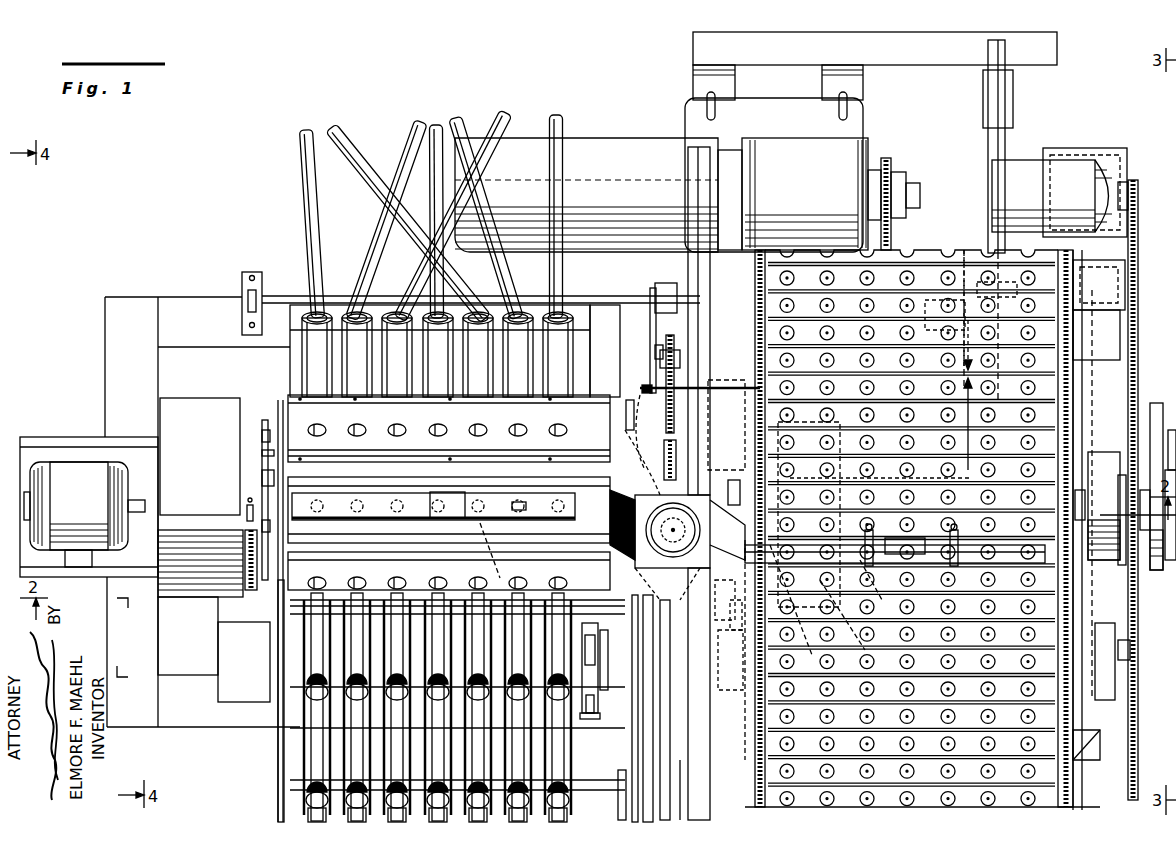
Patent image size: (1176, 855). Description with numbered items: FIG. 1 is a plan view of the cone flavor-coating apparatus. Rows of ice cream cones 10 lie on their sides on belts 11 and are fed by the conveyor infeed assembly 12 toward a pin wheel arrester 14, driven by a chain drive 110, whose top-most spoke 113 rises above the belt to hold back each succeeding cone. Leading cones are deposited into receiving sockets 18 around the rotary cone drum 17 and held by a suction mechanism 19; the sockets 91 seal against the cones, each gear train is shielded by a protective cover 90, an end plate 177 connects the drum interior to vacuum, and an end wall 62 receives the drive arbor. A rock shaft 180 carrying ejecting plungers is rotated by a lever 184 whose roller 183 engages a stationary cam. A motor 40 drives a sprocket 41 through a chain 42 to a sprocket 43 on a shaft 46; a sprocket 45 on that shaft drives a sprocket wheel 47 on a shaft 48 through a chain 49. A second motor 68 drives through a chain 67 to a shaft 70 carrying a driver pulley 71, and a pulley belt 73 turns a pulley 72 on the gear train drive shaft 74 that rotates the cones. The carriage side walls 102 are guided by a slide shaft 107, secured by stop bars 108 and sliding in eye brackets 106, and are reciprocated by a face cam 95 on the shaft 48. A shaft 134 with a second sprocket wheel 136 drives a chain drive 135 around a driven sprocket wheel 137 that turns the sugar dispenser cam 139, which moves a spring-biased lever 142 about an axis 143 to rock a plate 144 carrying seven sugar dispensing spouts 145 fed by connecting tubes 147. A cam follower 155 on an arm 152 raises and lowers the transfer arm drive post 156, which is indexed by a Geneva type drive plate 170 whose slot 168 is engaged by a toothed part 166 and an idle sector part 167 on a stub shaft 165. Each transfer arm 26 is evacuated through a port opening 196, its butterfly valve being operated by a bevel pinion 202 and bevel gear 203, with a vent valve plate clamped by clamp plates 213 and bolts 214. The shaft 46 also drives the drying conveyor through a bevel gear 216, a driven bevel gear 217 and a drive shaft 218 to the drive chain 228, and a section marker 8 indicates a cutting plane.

The section line 8 is at (703, 501).
The ice cream cones 10 is at (300, 795).
The belts 11 is at (300, 657).
The conveyor infeed assembly 12 is at (282, 702).
The pin wheel arrester 14 is at (362, 762).
The cone drum 17 is at (552, 386).
The receiving sockets 18 is at (394, 582).
The suction mechanism 19 is at (185, 600).
The transfer arm 26 is at (693, 170).
The motor 40 is at (845, 155).
The sprocket 41 is at (889, 164).
The chain 42 is at (890, 247).
The sprocket 43 is at (878, 340).
The sprocket 45 is at (1120, 350).
The rotatable shaft 46 is at (936, 290).
The sprocket wheel 47 is at (1130, 645).
The rotating shaft 48 is at (1085, 695).
The chain 49 is at (1138, 616).
The end wall 62 is at (626, 428).
The chain 67 is at (1128, 252).
The motor 68 is at (1030, 158).
The shaft 70 is at (1130, 455).
The driver pulley 71 is at (1175, 406).
The pulley 72 is at (1128, 565).
The pulley belt 73 is at (1152, 410).
The gear train drive shaft 74 is at (1163, 550).
The protective cover 90 is at (563, 412).
The sockets 91 is at (567, 430).
The face cam 95 is at (668, 765).
The depending side walls 102 is at (598, 648).
The eye brackets 106 is at (598, 720).
The slide shaft 107 is at (596, 705).
The stop bars 108 is at (598, 615).
The chain drive 110 is at (620, 785).
The top-most spoke 113 is at (480, 770).
The shaft 134 is at (722, 380).
The chain drive 135 is at (656, 380).
The second sprocket wheel 136 is at (671, 460).
The driven sprocket wheel 137 is at (674, 340).
The sugar dispenser cam 139 is at (655, 358).
The spring-biased lever 142 is at (650, 328).
The axis 143 is at (248, 313).
The plate 144 is at (300, 303).
The sugar dispensing spouts 145 is at (352, 371).
The connecting tubes 147 is at (308, 181).
The arm 152 is at (660, 645).
The cam follower 155 is at (724, 690).
The transfer arm drive post 156 is at (690, 536).
The stub shaft 165 is at (784, 610).
The toothed part 166 is at (864, 604).
The idle sector part 167 is at (904, 470).
The slot 168 is at (700, 610).
The Geneva type drive plate 170 is at (615, 472).
The end plate 177 is at (276, 585).
The rock shaft 180 is at (262, 478).
The roller 183 is at (262, 436).
The lever 184 is at (265, 454).
The port opening 196 is at (615, 520).
The bevel pinion 202 is at (712, 660).
The bevel gear 203 is at (612, 570).
The clamp plates 213 is at (700, 312).
The bolts 214 is at (676, 284).
The bevel gear 216 is at (976, 380).
The driven bevel gear 217 is at (978, 322).
The drive shaft 218 is at (988, 154).
The drive chain 228 is at (972, 270).